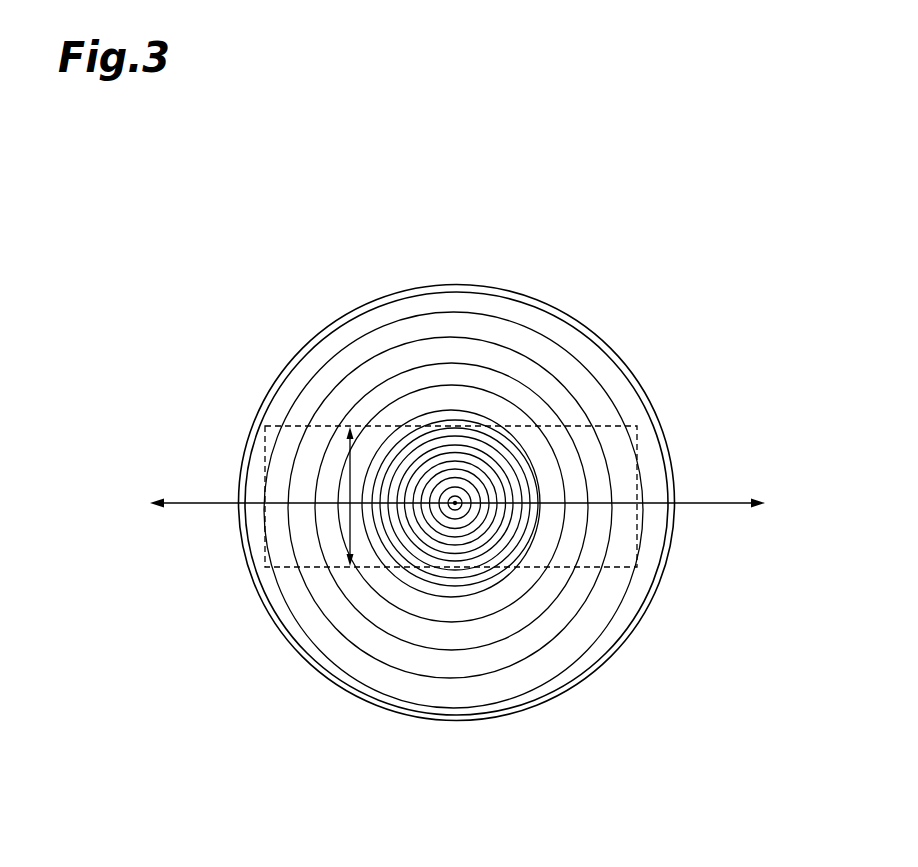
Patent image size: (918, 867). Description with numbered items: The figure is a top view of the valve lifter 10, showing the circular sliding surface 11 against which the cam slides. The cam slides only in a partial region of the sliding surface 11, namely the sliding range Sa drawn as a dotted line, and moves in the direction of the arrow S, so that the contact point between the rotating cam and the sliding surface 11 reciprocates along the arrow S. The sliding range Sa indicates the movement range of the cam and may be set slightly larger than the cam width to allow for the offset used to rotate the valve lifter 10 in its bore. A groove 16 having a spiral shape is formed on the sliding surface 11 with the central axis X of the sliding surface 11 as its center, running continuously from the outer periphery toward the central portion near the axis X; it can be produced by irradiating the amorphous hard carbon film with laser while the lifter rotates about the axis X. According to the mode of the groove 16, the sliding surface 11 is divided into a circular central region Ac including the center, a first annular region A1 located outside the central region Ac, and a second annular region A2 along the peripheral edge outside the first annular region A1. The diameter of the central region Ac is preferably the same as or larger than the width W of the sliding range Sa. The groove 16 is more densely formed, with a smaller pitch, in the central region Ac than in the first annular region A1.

The valve lifter 10 is at (611, 224).
The sliding surface 11 is at (410, 343).
The groove 16 is at (448, 650).
The first annular region A1 is at (509, 394).
The second annular region A2 is at (501, 310).
The central region Ac is at (505, 467).
The arrow indicating sliding direction S is at (718, 503).
The sliding range Sa is at (592, 568).
The width of the sliding range W is at (347, 470).
The central axis X is at (455, 503).